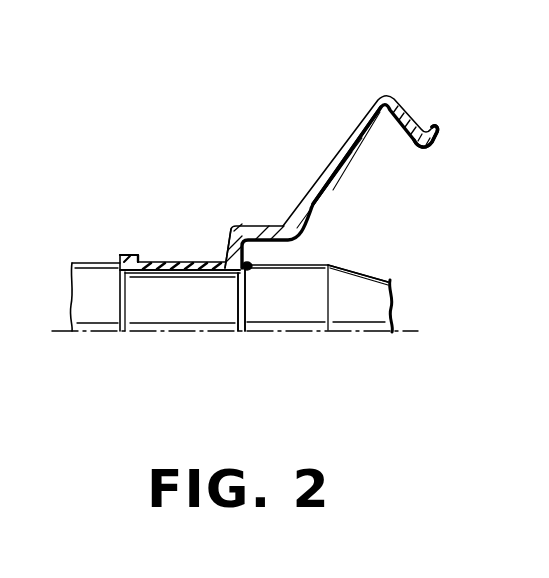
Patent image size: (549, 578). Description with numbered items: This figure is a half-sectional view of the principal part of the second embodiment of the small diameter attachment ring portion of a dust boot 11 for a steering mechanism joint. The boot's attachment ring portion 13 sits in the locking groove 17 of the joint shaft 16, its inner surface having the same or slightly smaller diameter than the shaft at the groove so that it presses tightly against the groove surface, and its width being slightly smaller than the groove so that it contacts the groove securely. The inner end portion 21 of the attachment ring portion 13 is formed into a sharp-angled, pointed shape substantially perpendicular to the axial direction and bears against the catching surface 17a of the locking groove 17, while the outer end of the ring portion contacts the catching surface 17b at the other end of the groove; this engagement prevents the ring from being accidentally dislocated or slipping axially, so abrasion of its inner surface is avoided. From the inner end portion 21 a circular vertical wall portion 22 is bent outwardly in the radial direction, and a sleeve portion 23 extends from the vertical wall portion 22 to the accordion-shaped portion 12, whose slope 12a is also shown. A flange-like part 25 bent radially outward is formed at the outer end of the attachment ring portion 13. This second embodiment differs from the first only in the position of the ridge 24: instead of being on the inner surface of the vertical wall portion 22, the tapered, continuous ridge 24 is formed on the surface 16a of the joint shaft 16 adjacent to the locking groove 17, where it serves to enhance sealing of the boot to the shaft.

The dust boot 11 is at (385, 94).
The accordion-shaped portion 12 is at (412, 122).
The slope 12a is at (340, 147).
The attachment ring portion 13 is at (168, 261).
The joint shaft 16 is at (93, 315).
The surface 16a is at (322, 265).
The locking groove 17 is at (185, 305).
The catching surface 17a is at (242, 308).
The catching surface 17b is at (125, 288).
The inner end portion 21 is at (245, 267).
The vertical wall portion 22 is at (226, 250).
The sleeve portion 23 is at (266, 228).
The ridge 24 is at (250, 261).
The flange-like part 25 is at (128, 257).